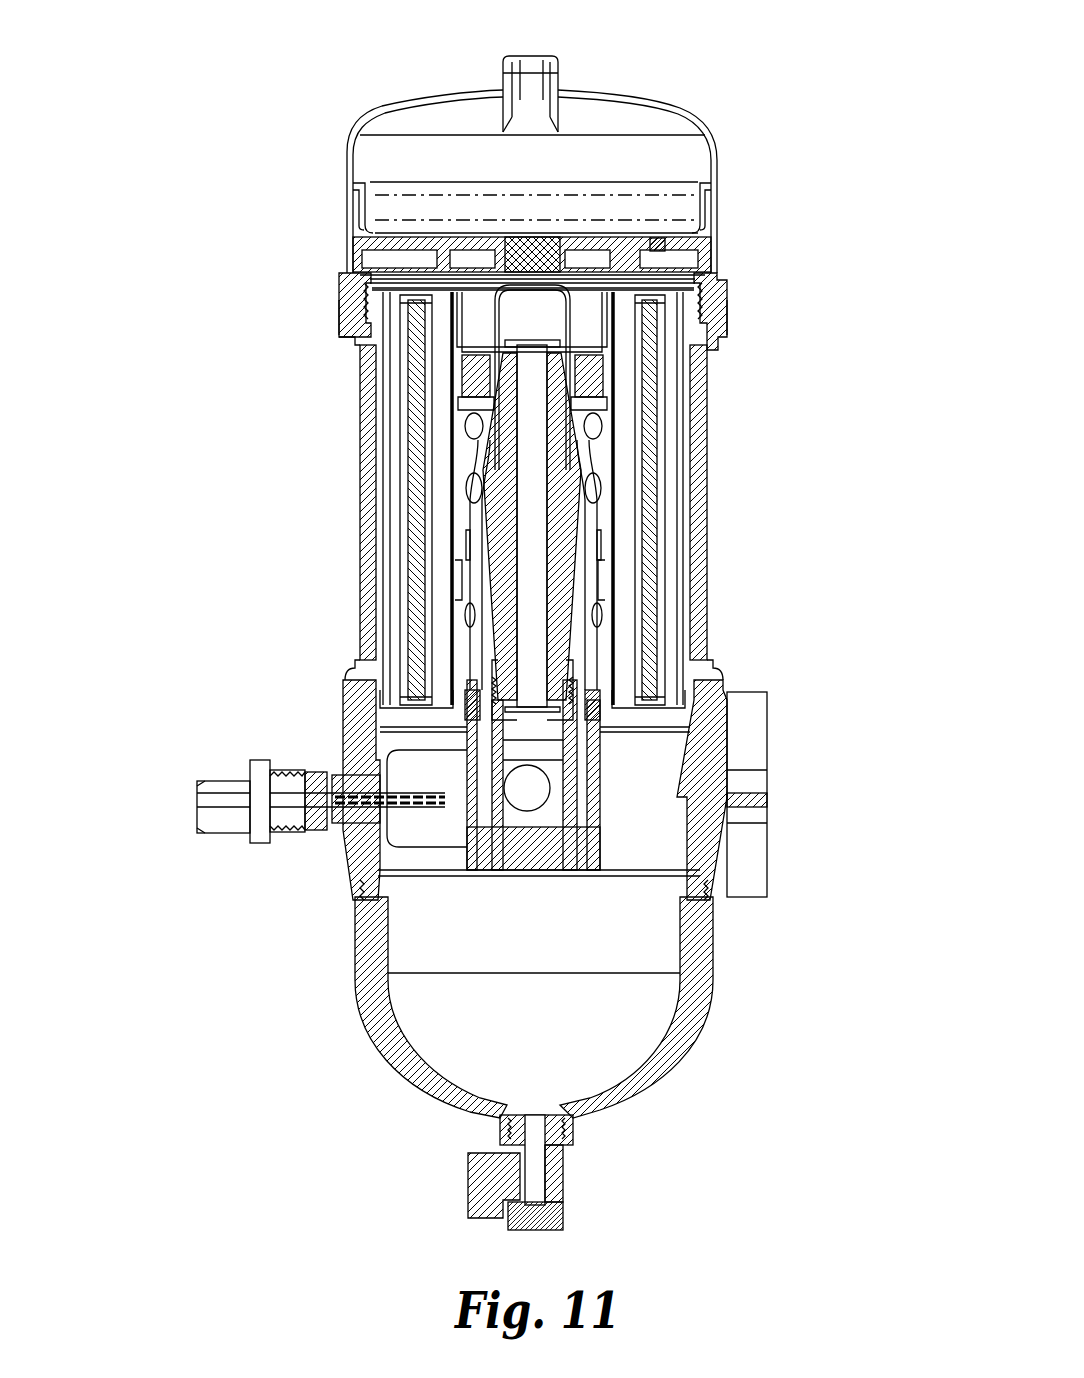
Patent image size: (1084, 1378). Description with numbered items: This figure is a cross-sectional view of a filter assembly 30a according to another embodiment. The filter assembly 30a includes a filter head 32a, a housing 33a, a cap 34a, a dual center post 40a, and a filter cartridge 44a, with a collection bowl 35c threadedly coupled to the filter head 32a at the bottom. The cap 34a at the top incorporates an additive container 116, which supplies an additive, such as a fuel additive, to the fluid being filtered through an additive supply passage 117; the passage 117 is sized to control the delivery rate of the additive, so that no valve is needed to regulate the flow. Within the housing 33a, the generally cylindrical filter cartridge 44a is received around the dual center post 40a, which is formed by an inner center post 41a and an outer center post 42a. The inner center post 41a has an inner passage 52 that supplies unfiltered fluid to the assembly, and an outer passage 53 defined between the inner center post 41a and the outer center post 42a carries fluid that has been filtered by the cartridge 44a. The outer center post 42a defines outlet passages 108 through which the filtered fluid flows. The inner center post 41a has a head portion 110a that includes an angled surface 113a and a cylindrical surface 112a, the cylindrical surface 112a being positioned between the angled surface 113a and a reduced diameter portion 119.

The filter assembly 30a is at (758, 60).
The additive container 116 is at (593, 92).
The reduced diameter portion 119 is at (488, 386).
The cylindrical surface 112a is at (497, 300).
The cap 34a is at (712, 200).
The angled surface 113a is at (350, 272).
The additive supply passage 117 is at (665, 252).
The head portion 110a is at (385, 357).
The housing 33a is at (697, 378).
The inner center post 41a is at (490, 467).
The filter cartridge 44a is at (670, 423).
The outlet passages 108 is at (600, 515).
The inner passage 52 is at (520, 530).
The dual center post 40a is at (592, 550).
The outer passage 53 is at (482, 618).
The outer center post 42a is at (603, 613).
The filter head 32a is at (727, 748).
The bowl 35c is at (713, 987).